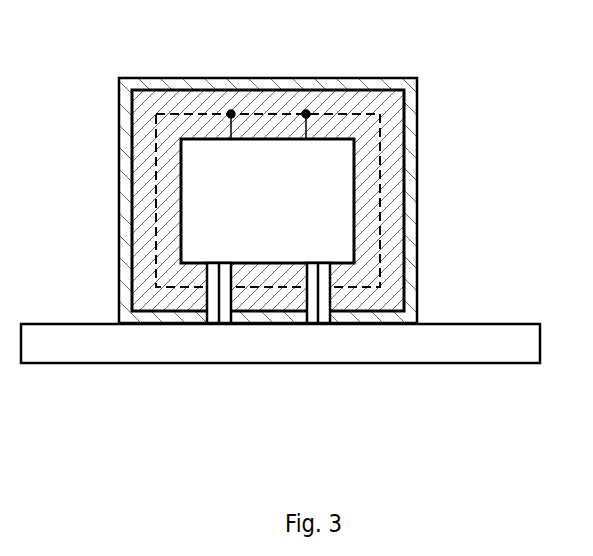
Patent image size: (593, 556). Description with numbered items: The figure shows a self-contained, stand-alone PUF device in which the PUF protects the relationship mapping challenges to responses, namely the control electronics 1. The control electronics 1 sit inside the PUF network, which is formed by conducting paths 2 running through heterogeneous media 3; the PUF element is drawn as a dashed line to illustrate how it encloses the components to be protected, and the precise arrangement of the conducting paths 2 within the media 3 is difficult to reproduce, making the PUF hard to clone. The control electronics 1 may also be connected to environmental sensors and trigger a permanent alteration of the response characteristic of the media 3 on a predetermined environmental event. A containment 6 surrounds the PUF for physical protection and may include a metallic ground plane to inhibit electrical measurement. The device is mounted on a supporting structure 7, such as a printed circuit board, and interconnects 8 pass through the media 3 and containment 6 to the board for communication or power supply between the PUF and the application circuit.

The control electronics 1 is at (267, 201).
The conducting paths 2 is at (367, 114).
The heterogeneous media 3 is at (392, 115).
The containment 6 is at (410, 188).
The supporting structure 7 is at (480, 337).
The interconnects 8 is at (318, 275).